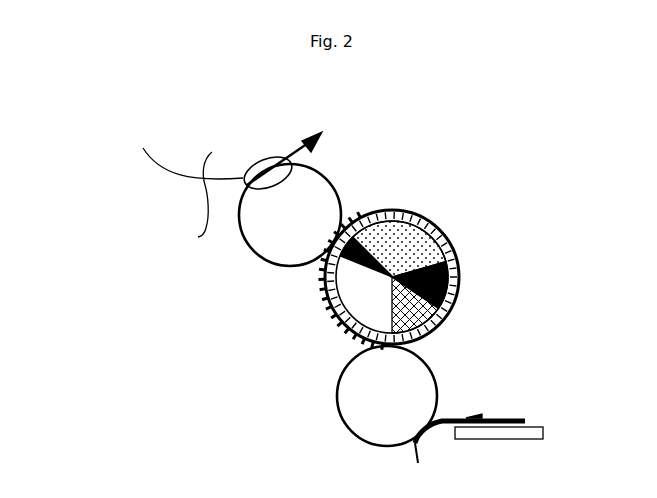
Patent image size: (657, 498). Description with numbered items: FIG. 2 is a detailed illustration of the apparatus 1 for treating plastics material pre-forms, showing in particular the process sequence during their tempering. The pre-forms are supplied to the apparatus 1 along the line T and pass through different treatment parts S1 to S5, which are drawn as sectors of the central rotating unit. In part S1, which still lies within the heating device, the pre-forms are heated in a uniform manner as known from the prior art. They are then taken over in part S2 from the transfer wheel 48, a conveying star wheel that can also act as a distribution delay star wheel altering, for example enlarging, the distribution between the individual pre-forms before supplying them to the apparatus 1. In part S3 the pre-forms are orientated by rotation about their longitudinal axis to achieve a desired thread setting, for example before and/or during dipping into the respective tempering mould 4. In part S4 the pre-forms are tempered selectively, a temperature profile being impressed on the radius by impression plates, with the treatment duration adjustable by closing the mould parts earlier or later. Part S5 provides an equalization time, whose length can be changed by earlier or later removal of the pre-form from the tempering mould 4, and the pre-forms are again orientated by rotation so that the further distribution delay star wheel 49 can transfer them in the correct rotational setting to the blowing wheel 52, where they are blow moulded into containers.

The apparatus 1 is at (438, 252).
The tempering mould 4 is at (458, 280).
The transfer wheel 48 is at (367, 408).
The further distribution delay star wheel 49 is at (317, 192).
The blowing wheel 52 is at (193, 202).
The treatment part S1 is at (523, 433).
The treatment part S2 is at (425, 337).
The treatment part S3 is at (452, 313).
The treatment part S4 is at (427, 243).
The treatment part S5 is at (371, 225).
The line T is at (355, 438).